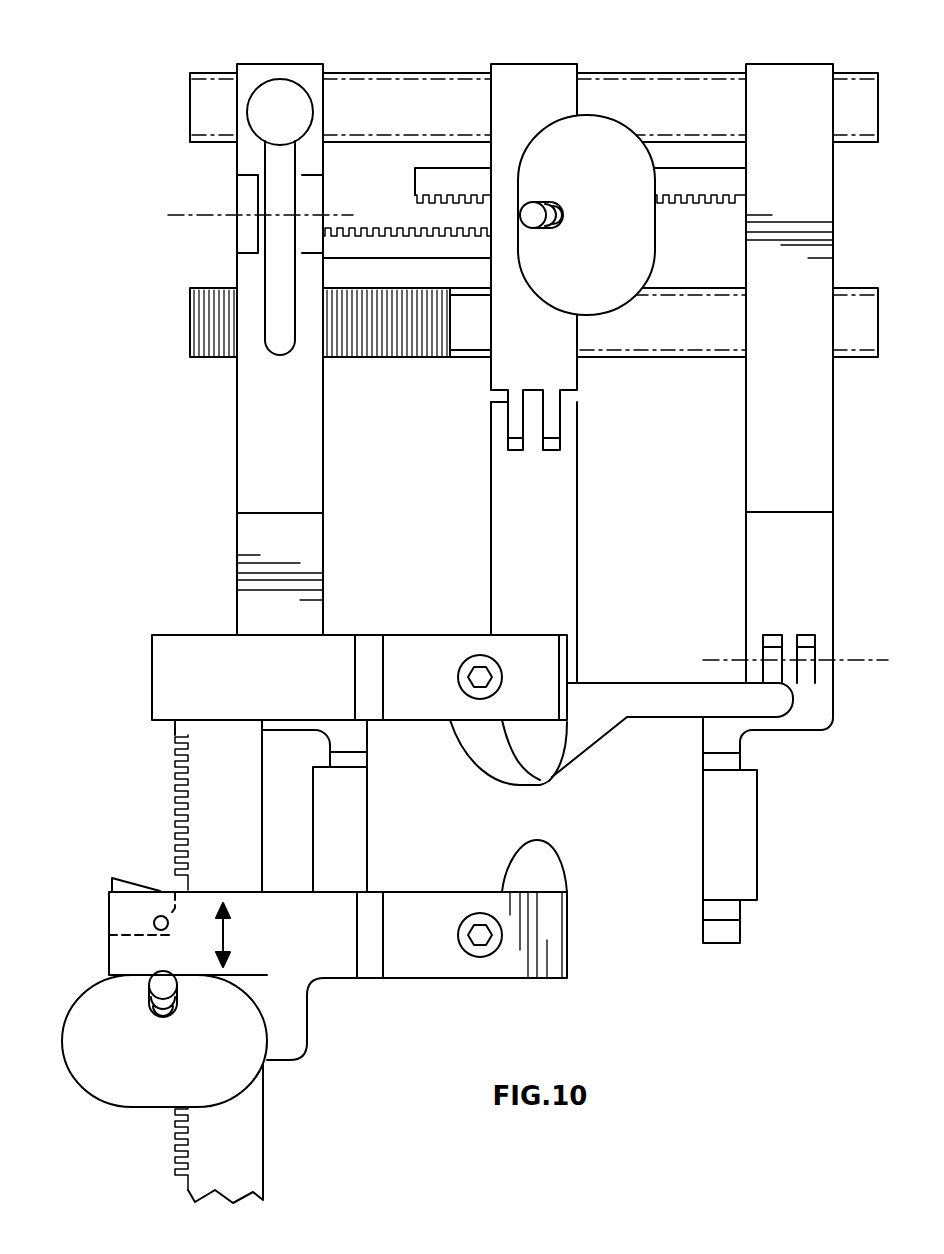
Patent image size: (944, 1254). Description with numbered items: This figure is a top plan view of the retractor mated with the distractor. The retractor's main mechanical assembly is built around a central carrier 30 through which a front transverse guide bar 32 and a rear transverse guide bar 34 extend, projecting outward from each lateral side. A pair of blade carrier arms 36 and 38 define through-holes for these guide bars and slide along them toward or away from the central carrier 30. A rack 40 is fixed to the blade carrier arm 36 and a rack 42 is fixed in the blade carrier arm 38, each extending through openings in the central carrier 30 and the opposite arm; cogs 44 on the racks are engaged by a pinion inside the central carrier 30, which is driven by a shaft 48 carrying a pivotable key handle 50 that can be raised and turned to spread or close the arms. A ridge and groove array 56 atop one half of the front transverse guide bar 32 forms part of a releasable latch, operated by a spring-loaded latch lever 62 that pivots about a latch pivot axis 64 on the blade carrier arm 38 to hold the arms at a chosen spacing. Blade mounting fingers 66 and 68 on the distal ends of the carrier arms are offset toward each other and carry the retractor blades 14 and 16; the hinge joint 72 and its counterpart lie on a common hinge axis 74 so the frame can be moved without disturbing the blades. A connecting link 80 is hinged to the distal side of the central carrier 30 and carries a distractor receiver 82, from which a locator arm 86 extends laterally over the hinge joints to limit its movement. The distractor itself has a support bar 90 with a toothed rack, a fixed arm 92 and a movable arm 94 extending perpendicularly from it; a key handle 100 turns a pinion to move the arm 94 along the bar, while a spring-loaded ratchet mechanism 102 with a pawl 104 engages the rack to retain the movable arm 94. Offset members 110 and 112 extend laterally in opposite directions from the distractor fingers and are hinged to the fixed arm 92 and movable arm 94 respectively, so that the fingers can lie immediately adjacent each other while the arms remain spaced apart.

The retractor blade 14 is at (362, 812).
The retractor blade 16 is at (750, 832).
The central carrier 30 is at (535, 74).
The front transverse guide bar 32 is at (680, 347).
The rear transverse guide bar 34 is at (412, 78).
The blade carrier arm 36 is at (237, 457).
The blade carrier arm 38 is at (746, 463).
The rack 40 is at (392, 232).
The rack 42 is at (700, 178).
The cogs 44 is at (703, 205).
The shaft 48 is at (547, 215).
The key handle 50 is at (600, 118).
The ridge and groove array 56 is at (386, 358).
The latch lever 62 is at (284, 96).
The latch pivot axis 64 is at (168, 217).
The blade mounting finger 66 is at (367, 760).
The blade mounting finger 68 is at (735, 935).
The hinge joint 72 is at (832, 675).
The hinge axis 74 is at (876, 656).
The connecting link 80 is at (491, 523).
The distractor receiver 82 is at (590, 730).
The locator arm 86 is at (655, 690).
The support bar 90 is at (252, 1130).
The fixed arm 92 is at (412, 643).
The movable arm 94 is at (428, 980).
The key handle 100 is at (128, 1108).
The ratchet mechanism 102 is at (93, 857).
The pawl 104 is at (130, 886).
The offset member 110 is at (546, 781).
The offset member 112 is at (522, 840).